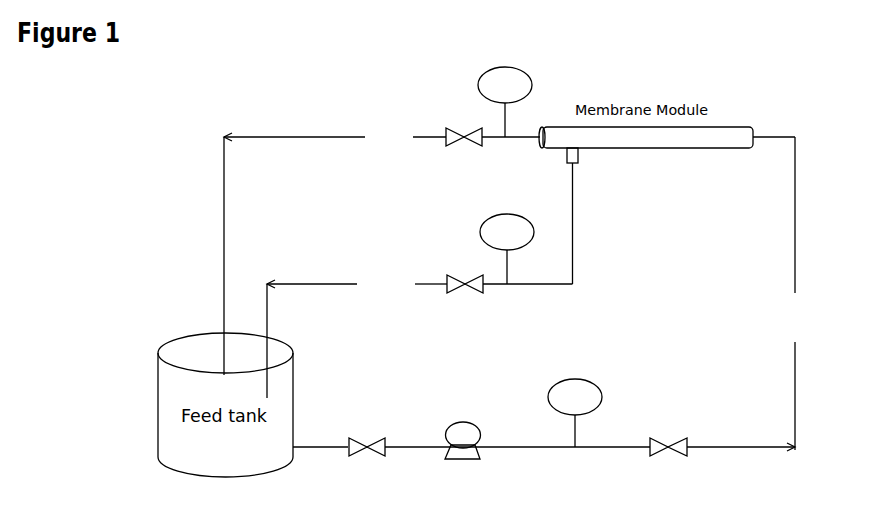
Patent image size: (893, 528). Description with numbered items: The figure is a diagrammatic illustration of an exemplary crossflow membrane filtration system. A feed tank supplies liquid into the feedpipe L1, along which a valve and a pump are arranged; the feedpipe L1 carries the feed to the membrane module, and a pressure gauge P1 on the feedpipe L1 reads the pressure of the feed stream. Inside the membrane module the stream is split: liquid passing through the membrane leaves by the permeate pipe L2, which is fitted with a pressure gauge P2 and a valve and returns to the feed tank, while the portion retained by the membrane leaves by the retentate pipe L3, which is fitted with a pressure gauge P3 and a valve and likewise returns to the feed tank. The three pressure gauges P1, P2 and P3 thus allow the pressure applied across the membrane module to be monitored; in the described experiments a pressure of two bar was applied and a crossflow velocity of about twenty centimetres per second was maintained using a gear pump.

The feedpipe L1 is at (550, 313).
The permeate pipe L2 is at (420, 280).
The retentate pipe L3 is at (382, 250).
The pressure gauge P1 is at (575, 413).
The pressure gauge P2 is at (507, 249).
The pressure gauge P3 is at (505, 102).